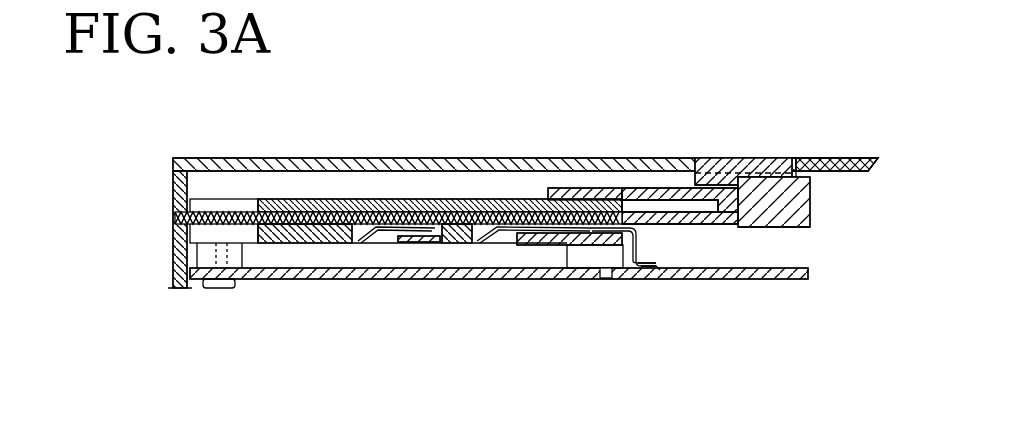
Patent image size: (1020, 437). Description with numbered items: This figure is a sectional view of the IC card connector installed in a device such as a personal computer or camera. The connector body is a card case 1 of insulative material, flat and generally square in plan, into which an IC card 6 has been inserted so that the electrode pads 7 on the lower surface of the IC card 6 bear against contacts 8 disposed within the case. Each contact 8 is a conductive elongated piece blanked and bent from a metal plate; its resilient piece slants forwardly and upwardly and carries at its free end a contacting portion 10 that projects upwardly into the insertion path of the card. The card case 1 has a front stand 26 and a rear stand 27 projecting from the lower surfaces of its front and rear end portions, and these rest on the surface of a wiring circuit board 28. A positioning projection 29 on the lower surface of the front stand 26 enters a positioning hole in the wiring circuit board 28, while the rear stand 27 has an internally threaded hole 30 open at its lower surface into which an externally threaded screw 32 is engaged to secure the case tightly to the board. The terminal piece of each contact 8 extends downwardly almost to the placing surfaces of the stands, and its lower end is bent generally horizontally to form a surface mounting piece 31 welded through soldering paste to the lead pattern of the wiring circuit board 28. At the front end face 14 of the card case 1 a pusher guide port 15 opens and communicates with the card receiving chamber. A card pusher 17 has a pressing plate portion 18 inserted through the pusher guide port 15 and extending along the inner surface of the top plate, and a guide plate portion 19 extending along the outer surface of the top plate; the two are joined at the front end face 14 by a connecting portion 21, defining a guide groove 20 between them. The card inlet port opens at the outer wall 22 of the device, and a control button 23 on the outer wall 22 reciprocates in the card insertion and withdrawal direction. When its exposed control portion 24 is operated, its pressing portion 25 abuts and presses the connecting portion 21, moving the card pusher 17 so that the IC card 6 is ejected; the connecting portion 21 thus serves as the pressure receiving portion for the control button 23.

The card case 1 is at (270, 209).
The IC card 6 is at (303, 217).
The electrode pads 7 is at (382, 217).
The contacts 8 is at (428, 207).
The contacting portion 10 is at (380, 234).
The front end face 14 is at (636, 246).
The pusher guide port 15 is at (619, 210).
The card pusher 17 is at (717, 227).
The pressing plate portion 18 is at (668, 217).
The guide plate portion 19 is at (590, 192).
The guide groove 20 is at (655, 205).
The connecting portion 21 is at (752, 203).
The outer wall 22 is at (331, 163).
The control button 23 is at (827, 162).
The control portion 24 is at (753, 162).
The pressing portion 25 is at (780, 223).
The front stand 26 is at (585, 260).
The rear stand 27 is at (242, 258).
The wiring circuit board 28 is at (323, 279).
The positioning projection 29 is at (607, 280).
The internally threaded hole 30 is at (214, 248).
The surface mounting piece 31 is at (658, 262).
The externally threaded screw 32 is at (218, 290).